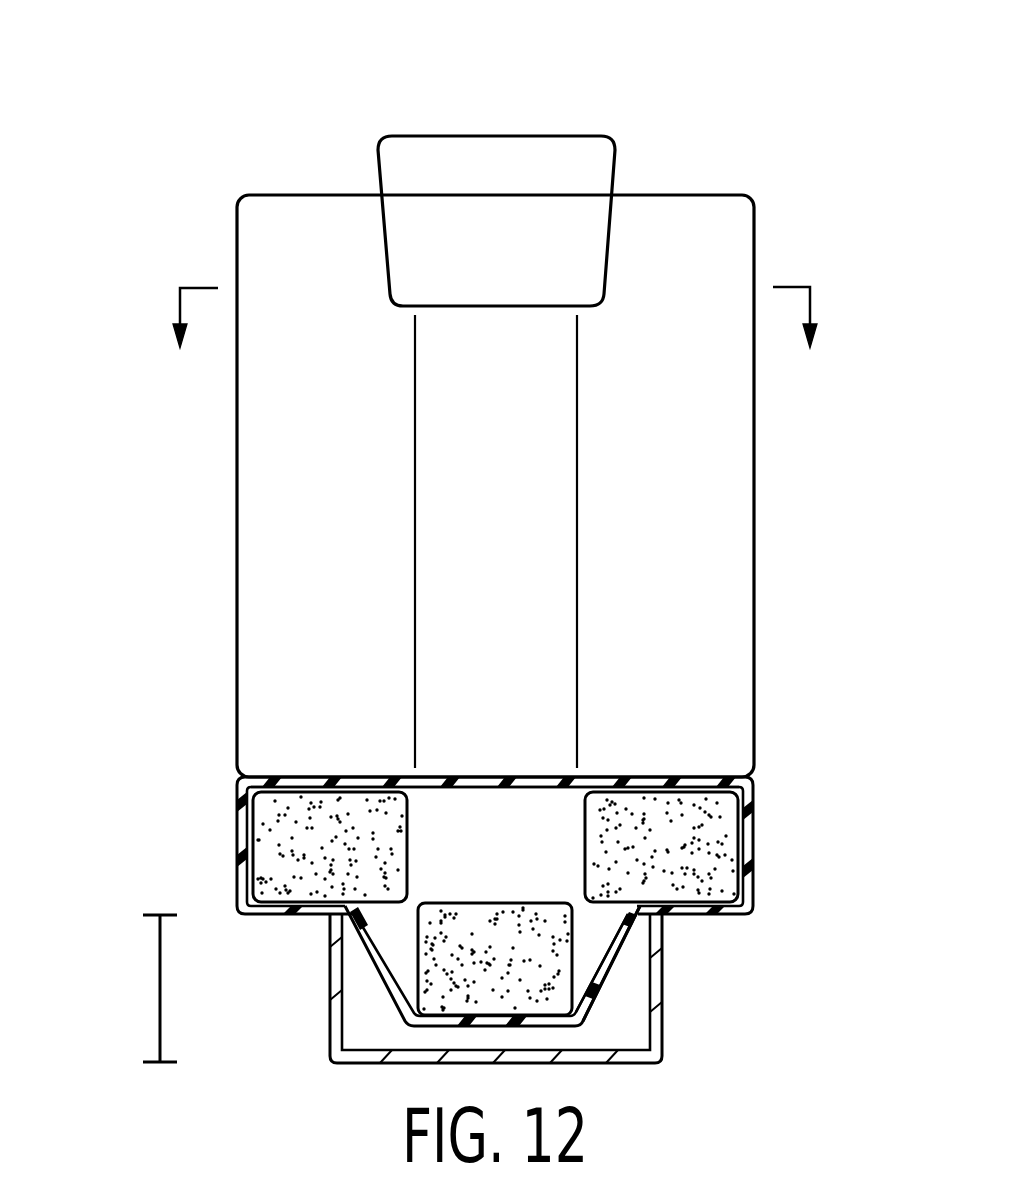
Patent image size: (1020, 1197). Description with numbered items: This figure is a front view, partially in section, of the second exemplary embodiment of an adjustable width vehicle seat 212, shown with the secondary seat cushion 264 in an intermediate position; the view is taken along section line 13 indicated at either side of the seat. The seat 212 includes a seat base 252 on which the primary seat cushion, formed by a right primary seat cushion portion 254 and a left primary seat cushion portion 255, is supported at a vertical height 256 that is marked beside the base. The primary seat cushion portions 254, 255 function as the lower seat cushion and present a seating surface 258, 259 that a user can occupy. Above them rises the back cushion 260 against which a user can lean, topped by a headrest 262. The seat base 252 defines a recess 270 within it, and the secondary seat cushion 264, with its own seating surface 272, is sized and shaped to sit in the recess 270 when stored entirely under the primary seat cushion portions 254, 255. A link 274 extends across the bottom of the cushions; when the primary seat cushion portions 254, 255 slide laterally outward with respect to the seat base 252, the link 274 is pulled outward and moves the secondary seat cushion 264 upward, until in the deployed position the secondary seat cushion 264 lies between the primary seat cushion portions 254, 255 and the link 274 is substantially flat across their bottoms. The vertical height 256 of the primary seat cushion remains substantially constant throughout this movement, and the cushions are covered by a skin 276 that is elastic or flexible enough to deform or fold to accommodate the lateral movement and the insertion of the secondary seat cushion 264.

The seat 212 is at (682, 135).
The back cushion 260 is at (301, 194).
The headrest 262 is at (507, 136).
The section line 13- 13 is at (495, 350).
The seating surface 258 is at (302, 777).
The skin 276 is at (358, 777).
The seating surface 259 is at (680, 783).
The primary seat cushion portion 254 is at (255, 833).
The primary seat cushion portion 255 is at (738, 840).
The seating surface 272 is at (496, 903).
The recess 270 is at (366, 1013).
The link 274 is at (573, 958).
The secondary seat cushion 264 is at (615, 950).
The seat base 252 is at (663, 1042).
The vertical height 256 is at (160, 978).